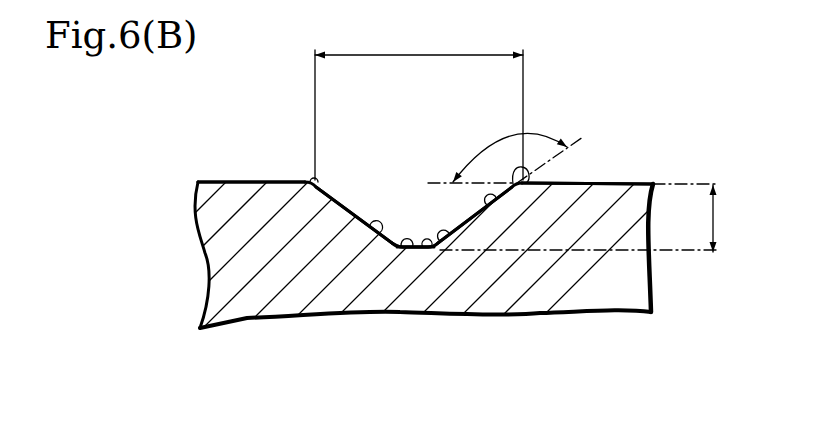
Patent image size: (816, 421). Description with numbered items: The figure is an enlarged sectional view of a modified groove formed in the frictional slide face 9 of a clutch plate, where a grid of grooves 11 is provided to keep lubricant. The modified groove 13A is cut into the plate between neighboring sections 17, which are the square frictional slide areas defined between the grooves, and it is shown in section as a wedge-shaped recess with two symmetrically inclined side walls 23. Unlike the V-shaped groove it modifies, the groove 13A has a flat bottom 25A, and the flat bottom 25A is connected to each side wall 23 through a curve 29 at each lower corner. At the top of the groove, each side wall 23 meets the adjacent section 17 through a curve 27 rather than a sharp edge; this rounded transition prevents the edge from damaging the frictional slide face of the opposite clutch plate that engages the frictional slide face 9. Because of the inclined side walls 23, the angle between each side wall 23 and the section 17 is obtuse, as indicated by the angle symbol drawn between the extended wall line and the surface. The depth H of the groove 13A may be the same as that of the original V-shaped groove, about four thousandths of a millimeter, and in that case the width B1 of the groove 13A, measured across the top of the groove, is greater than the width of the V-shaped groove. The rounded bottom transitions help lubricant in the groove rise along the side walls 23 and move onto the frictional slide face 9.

The frictional slide face 9 is at (223, 181).
The grooves 11 is at (349, 188).
The groove 13A is at (423, 224).
The section 17 is at (257, 181).
The side wall 23 is at (369, 231).
The flat bottom 25A is at (431, 250).
The curve 27 is at (313, 176).
The curve 29 is at (404, 252).
The width of the groove B1 is at (419, 104).
The depth of the groove H is at (583, 217).